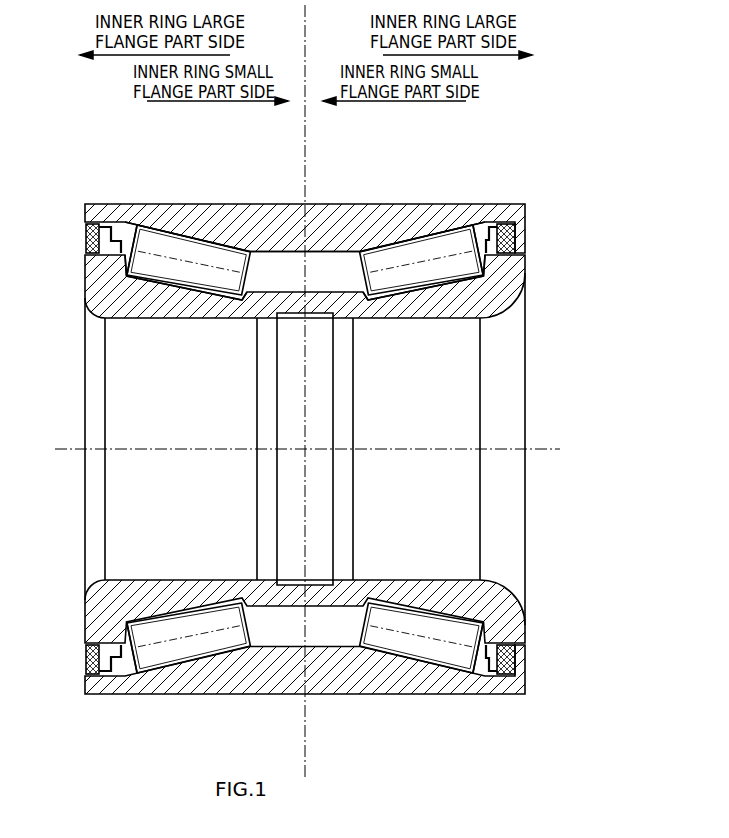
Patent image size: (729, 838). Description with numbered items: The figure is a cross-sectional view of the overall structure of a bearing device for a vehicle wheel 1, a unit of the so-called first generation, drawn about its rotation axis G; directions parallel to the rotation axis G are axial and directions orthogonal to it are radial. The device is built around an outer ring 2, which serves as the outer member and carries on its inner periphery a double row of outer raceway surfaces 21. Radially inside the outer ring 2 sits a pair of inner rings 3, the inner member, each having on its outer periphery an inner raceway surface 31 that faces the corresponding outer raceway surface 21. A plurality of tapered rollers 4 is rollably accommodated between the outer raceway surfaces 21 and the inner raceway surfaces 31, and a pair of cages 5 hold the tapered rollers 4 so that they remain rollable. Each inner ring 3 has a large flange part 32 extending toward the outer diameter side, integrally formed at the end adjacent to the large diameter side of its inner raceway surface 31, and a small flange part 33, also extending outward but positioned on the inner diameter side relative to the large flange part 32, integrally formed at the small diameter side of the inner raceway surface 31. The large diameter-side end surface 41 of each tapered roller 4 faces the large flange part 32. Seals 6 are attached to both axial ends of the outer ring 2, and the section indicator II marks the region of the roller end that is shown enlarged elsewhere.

The bearing device for a vehicle wheel 1 is at (554, 139).
The outer ring 2 is at (157, 203).
The outer raceway surface 21 is at (213, 243).
The inner ring 3 is at (85, 283).
The inner raceway surface 31 is at (214, 297).
The large flange part 32 is at (114, 254).
The small flange part 33 is at (317, 294).
The tapered roller 4 is at (178, 233).
The large diameter-side end surface 41 is at (476, 226).
The cage 5 is at (254, 250).
The seal 6 is at (86, 231).
The rotation axis G is at (545, 445).
The section line of FIG. 2 II is at (479, 286).